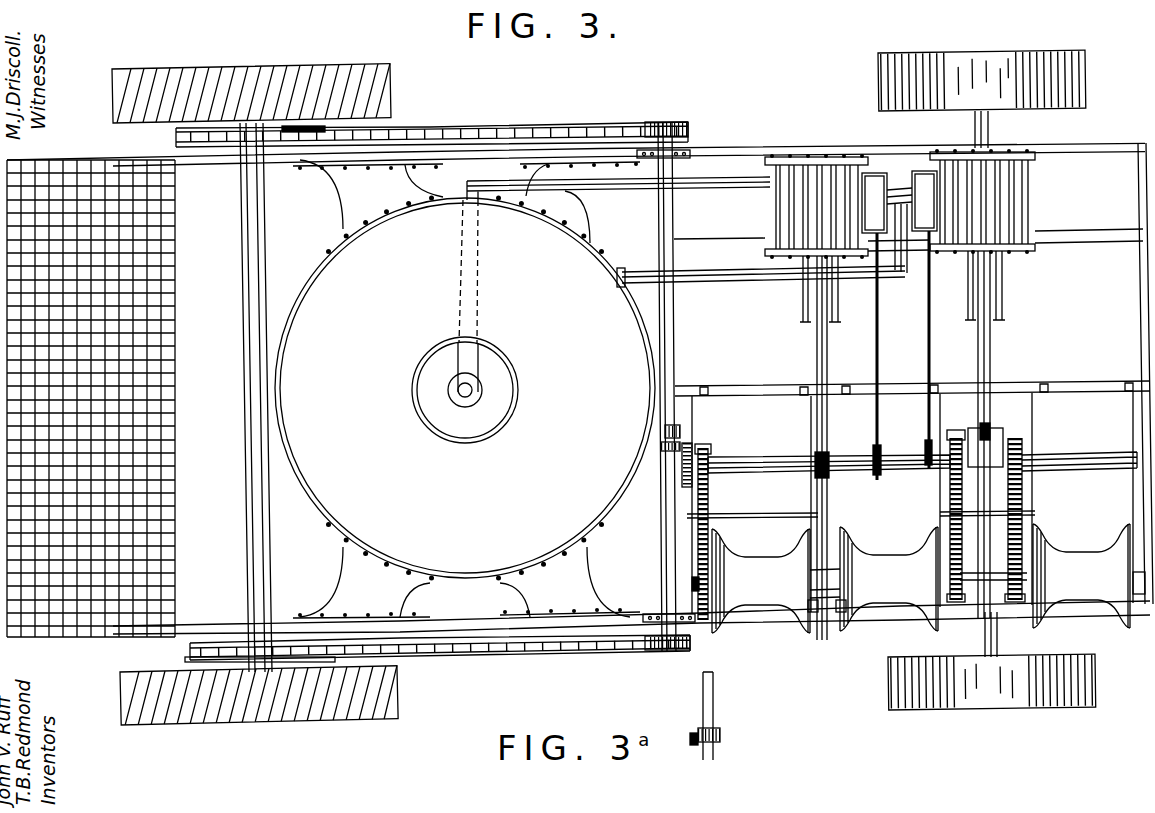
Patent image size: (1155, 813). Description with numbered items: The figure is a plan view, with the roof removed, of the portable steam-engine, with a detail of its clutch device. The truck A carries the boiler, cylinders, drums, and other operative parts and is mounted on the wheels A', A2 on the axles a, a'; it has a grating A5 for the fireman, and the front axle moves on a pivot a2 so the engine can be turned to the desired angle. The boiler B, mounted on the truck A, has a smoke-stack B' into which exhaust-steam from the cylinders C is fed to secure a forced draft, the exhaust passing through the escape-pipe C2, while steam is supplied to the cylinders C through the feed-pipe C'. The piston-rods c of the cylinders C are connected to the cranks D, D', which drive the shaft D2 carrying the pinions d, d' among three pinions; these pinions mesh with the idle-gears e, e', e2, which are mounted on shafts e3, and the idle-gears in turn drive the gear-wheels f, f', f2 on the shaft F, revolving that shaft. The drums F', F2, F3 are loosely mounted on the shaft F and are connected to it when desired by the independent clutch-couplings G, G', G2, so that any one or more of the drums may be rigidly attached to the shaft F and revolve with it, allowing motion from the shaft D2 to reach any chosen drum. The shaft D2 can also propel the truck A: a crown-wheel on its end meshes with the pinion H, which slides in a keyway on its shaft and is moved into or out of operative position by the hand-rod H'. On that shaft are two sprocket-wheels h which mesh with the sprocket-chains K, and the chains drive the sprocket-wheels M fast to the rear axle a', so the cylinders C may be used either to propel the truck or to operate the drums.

In FIG. 3, the truck A is at (580, 371).
In FIG. 3, the wheels A' is at (987, 383).
In FIG. 3, the wheels A2 is at (156, 72).
In FIG. 3, the grating A5 is at (78, 165).
In FIG. 3, the axle a is at (1000, 384).
In FIG. 3, the rear axle a' is at (235, 397).
In FIG. 3, the pivot a2 is at (988, 435).
In FIG. 3, the boiler B is at (465, 388).
In FIG. 3, the smoke-stack B' is at (488, 390).
In FIG. 3, the cylinders C is at (911, 297).
In FIG. 3, the feed-pipe C' is at (764, 251).
In FIG. 3, the escape-pipe C2 is at (712, 190).
In FIG. 3, the piston-rods c is at (828, 346).
In FIG. 3, the crank D is at (880, 440).
In FIG. 3, the crank D' is at (841, 448).
In FIG. 3, the shaft D2 is at (1074, 458).
In FIG. 3, the pinion d is at (715, 439).
In FIG. 3, the pinion d' is at (958, 419).
In FIG. 3, the idle-gear e is at (722, 534).
In FIG. 3, the idle-gear e' is at (935, 519).
In FIG. 3, the idle-gear e2 is at (1023, 502).
In FIG. 3, the shaft e3 is at (946, 513).
In FIG. 3, the shaft F is at (825, 557).
In FIG. 3, the drum F' is at (761, 580).
In FIG. 3, the drum F2 is at (870, 555).
In FIG. 3, the drum F3 is at (1080, 556).
In FIG. 3, the gear-wheel f is at (704, 624).
In FIG. 3, the gear-wheel f' is at (955, 622).
In FIG. 3, the gear-wheel f2 is at (1014, 604).
In FIG. 3, the clutch-coupling G is at (811, 645).
In FIG. 3, the clutch-coupling G' is at (849, 645).
In FIG. 3, the clutch-coupling G2 is at (1142, 598).
In FIG. 3, the pinion H is at (638, 431).
In FIG. 3A, the pinion H is at (681, 745).
In FIG. 3, the hand-rod H' is at (699, 418).
In FIG. 3A, the hand-rod H' is at (732, 735).
In FIG. 3, the sprocket-wheels h is at (660, 121).
In FIG. 3, the sprocket-chains K is at (490, 128).
In FIG. 3, the sprocket-wheels M is at (303, 127).